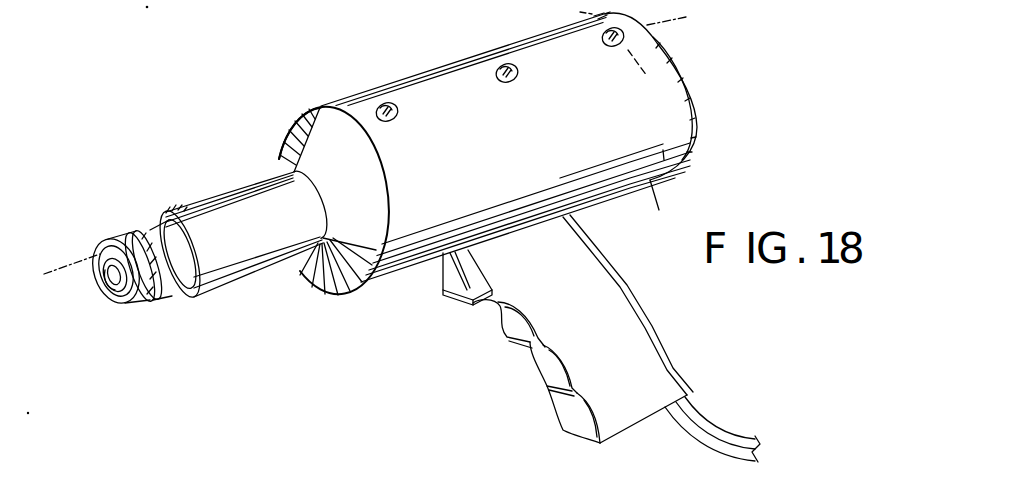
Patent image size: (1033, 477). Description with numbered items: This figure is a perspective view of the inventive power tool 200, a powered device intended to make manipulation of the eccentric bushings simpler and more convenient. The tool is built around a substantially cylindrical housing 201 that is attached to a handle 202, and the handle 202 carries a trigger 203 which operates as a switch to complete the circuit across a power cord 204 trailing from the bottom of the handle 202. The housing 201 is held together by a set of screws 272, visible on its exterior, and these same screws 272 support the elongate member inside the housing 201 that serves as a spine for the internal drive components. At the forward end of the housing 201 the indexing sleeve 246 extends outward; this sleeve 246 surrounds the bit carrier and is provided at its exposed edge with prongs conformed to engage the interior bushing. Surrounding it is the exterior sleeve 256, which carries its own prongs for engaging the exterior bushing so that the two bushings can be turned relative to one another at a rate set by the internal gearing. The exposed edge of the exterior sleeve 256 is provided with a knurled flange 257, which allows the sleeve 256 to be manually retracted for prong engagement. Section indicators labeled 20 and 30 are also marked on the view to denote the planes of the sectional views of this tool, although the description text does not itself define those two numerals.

The section line 20- 20 is at (56, 268).
The section line 30- 30 is at (573, 15).
The power tool 200 is at (357, 288).
The housing 201 is at (328, 105).
The handle 202 is at (658, 340).
The trigger 203 is at (452, 272).
The power cord 204 is at (724, 437).
The indexing sleeve 246 is at (123, 300).
The exterior sleeve 256 is at (158, 296).
The knurled flange 257 is at (136, 246).
The screws 272 is at (496, 70).